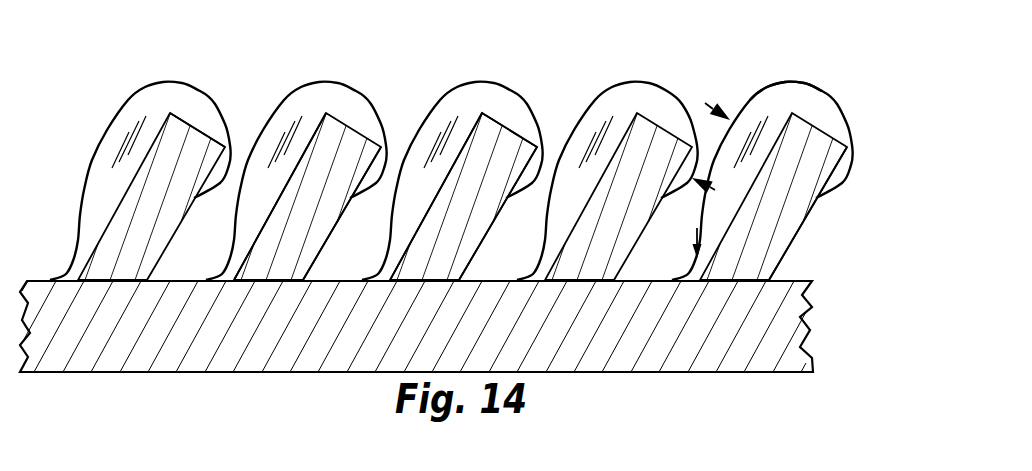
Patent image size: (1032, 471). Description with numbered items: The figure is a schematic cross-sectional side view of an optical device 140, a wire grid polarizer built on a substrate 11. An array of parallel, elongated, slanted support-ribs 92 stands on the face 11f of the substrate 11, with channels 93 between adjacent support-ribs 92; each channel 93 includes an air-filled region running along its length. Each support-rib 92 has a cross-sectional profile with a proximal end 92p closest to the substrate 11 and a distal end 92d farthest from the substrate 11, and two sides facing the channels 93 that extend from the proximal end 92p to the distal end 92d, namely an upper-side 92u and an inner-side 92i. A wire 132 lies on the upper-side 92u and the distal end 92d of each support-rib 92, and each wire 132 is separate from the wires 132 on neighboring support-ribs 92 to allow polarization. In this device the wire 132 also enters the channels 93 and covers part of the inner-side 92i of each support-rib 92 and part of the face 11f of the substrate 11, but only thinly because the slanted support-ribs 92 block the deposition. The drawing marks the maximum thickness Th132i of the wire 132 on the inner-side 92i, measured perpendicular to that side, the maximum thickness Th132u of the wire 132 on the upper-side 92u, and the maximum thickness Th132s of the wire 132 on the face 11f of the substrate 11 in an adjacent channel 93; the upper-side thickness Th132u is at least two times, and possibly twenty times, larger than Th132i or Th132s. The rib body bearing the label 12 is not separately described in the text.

The optical device 140 is at (827, 24).
The wire 132 is at (459, 162).
The support-rib 92 is at (164, 216).
The distal end 92d is at (197, 134).
The upper-side 92u is at (343, 140).
The proximal end 92p is at (128, 261).
The inner-side 92i is at (330, 231).
The channel 93 is at (409, 257).
The fin element 12 is at (490, 168).
The substrate 11 is at (445, 351).
The face of the substrate 11f is at (803, 281).
The maximum thickness of the wire on the inner-side Th132i is at (656, 158).
The maximum thickness of the wire on the upper-side Th132u is at (791, 154).
The maximum thickness of the wire on the face of the substrate Th132s is at (695, 295).